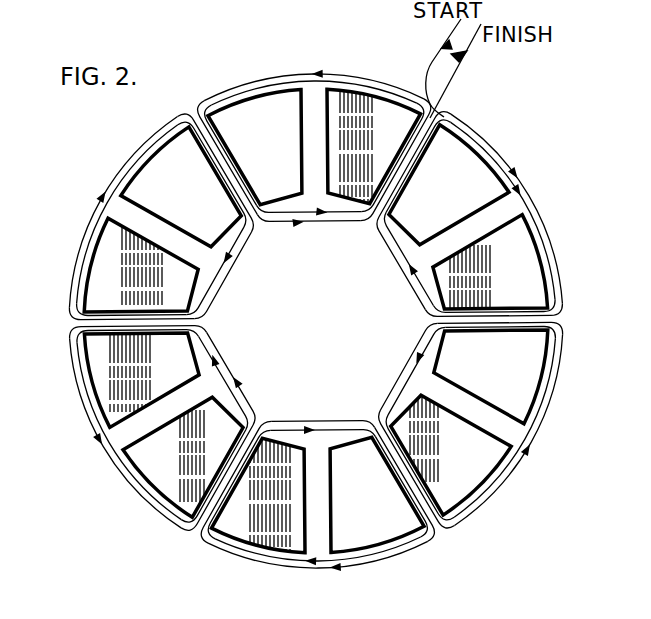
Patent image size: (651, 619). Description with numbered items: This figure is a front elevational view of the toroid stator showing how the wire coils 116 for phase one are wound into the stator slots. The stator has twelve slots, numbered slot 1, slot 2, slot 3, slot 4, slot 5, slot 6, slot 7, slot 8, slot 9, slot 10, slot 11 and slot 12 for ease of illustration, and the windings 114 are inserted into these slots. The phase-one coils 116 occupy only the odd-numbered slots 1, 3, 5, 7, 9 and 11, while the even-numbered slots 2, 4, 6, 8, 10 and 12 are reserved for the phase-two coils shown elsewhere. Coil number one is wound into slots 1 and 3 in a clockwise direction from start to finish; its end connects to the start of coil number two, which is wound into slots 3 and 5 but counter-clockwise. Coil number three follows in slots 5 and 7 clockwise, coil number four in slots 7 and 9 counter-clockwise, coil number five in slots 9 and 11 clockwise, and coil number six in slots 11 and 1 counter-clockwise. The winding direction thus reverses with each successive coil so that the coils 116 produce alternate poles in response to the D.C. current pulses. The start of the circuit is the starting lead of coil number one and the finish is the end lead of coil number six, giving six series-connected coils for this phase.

The slot 1 is at (430, 113).
The slot 2 is at (505, 198).
The slot 3 is at (538, 327).
The slot 4 is at (512, 433).
The slot 5 is at (443, 527).
The slot 6 is at (320, 543).
The slot 7 is at (203, 513).
The slot 8 is at (127, 435).
The slot 9 is at (92, 327).
The slot 10 is at (131, 210).
The slot 11 is at (212, 120).
The slot 12 is at (312, 93).
The windings 114 is at (143, 500).
The wire coils for phase one 116 is at (407, 557).